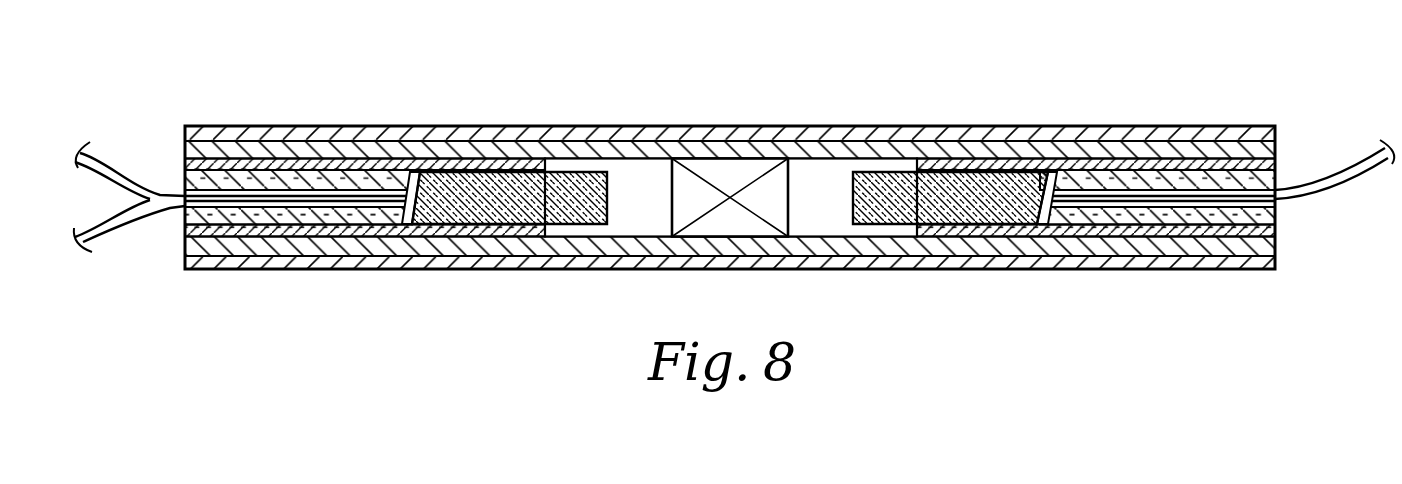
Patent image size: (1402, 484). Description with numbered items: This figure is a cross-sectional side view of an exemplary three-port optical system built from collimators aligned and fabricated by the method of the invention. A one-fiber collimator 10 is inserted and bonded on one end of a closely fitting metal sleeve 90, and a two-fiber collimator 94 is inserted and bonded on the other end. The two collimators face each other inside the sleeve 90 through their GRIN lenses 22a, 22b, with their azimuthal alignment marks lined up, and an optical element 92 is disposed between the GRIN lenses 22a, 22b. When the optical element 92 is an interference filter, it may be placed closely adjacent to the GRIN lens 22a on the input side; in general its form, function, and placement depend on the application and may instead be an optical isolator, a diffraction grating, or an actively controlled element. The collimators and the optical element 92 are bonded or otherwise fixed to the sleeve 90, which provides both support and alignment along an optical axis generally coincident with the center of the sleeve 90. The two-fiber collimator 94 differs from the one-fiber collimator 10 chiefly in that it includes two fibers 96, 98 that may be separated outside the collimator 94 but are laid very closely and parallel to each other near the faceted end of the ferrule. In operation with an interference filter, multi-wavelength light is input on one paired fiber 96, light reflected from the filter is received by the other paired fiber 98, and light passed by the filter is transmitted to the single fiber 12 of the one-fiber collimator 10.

The one-fiber collimator 10 is at (1115, 180).
The single fiber 12 is at (1352, 172).
The GRIN lens 22a is at (517, 180).
The GRIN lens 22b is at (870, 180).
The sleeve 90 is at (654, 150).
The optical element 92 is at (732, 173).
The two-fiber collimator 94 is at (270, 183).
The paired fiber 96 is at (108, 165).
The paired fiber 98 is at (110, 227).